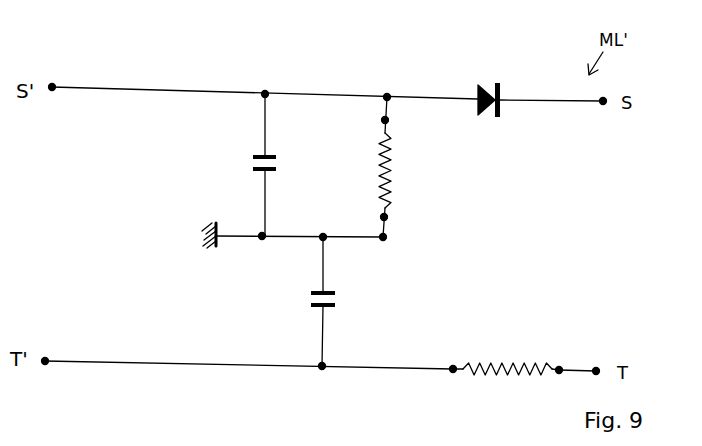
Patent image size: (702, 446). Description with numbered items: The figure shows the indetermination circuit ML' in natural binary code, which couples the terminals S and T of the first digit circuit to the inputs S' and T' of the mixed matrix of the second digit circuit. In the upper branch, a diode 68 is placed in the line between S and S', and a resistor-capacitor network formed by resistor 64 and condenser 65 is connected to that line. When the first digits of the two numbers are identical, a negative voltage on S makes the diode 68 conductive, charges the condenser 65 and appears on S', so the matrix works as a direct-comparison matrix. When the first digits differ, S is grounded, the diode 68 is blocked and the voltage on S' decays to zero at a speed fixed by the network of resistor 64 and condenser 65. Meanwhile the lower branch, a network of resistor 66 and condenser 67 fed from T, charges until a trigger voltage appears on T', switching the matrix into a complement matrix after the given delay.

The resistor 64 is at (403, 167).
The condenser 65 is at (280, 165).
The resistor 66 is at (506, 356).
The condenser 67 is at (340, 301).
The diode 68 is at (509, 95).